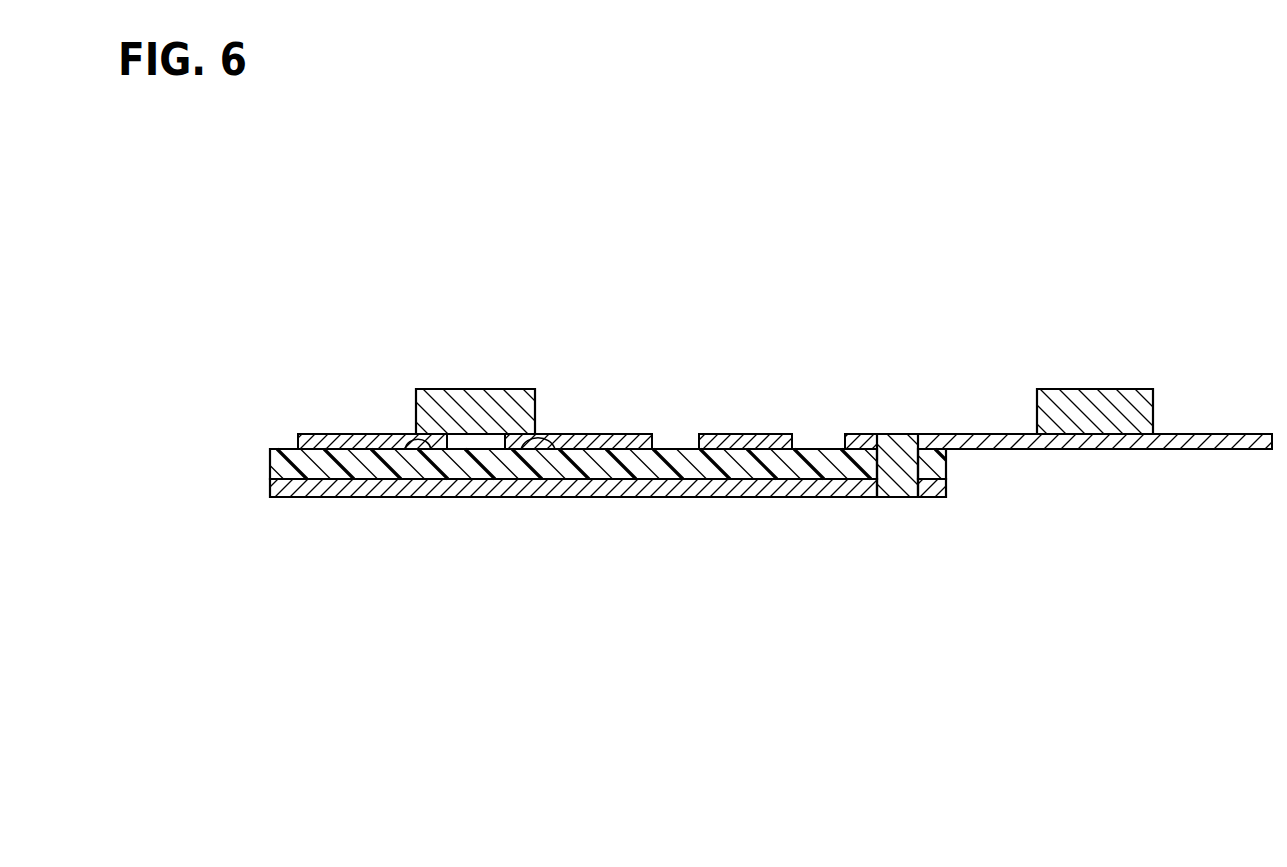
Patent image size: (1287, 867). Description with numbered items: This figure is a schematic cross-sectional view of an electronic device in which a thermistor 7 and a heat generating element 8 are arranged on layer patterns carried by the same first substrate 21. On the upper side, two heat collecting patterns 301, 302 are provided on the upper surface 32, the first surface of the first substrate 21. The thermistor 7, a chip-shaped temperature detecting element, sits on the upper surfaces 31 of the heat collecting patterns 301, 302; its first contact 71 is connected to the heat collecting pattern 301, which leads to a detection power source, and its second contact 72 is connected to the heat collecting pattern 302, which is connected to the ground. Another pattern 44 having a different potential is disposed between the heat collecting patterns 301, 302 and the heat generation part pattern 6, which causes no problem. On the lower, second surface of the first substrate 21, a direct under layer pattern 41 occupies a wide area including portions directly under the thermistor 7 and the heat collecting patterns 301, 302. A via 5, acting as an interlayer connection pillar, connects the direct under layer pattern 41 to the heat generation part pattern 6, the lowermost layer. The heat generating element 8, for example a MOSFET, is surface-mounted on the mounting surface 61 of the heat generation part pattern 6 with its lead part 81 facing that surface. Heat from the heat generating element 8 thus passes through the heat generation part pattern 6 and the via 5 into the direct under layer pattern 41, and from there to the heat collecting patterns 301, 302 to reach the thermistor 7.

The first substrate 21 is at (278, 470).
The direct under layer pattern 41 is at (290, 488).
The upper surface (first surface) of the first substrate 32 is at (577, 453).
The upper surfaces of the heat collecting patterns 31 is at (485, 394).
The heat collecting pattern 301 is at (338, 437).
The heat collecting pattern 302 is at (592, 437).
The another pattern 44 is at (728, 437).
The via 5 is at (900, 485).
The heat generation part pattern 6 is at (1218, 440).
The mounting surface 61 is at (1172, 432).
The thermistor 7 is at (455, 395).
The first contact 71 is at (413, 438).
The second contact 72 is at (556, 436).
The heat generating element 8 is at (1092, 395).
The lead part 81 is at (1080, 437).